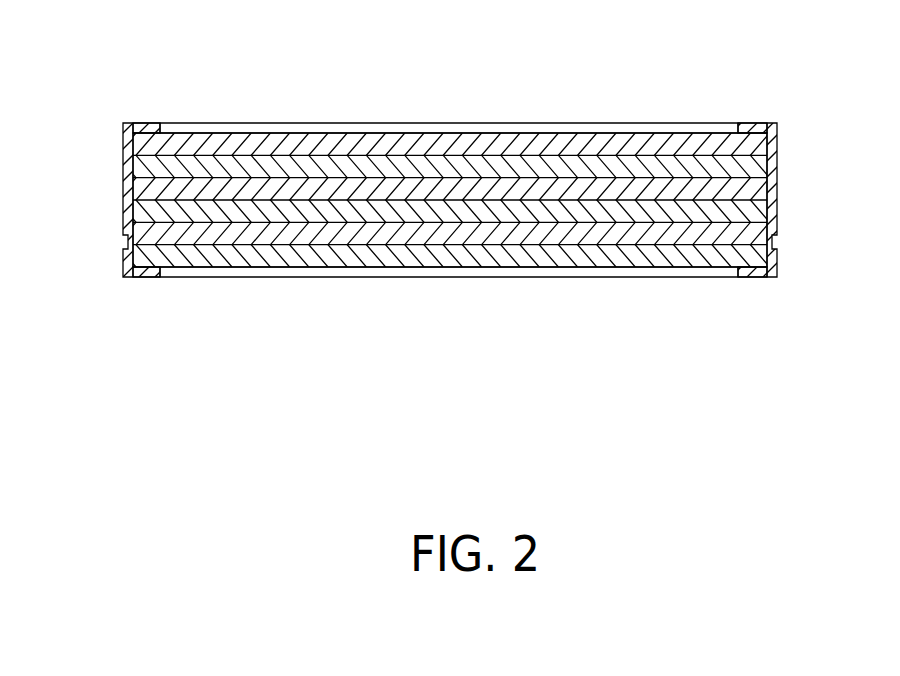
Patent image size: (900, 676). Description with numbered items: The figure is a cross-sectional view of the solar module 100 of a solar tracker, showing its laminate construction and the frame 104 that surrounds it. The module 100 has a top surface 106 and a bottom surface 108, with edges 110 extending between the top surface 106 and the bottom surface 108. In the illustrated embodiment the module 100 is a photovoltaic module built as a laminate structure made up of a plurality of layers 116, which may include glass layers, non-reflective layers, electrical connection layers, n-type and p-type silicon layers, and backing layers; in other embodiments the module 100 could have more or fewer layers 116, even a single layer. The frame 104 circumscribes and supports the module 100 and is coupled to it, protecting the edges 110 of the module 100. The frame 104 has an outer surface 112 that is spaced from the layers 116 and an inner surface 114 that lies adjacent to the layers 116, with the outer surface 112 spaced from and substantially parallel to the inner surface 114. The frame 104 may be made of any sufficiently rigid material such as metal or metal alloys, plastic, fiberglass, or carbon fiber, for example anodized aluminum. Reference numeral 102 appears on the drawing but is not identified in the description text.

The solar module 100 is at (172, 72).
The top plate 102 is at (373, 123).
The frame 104 is at (131, 125).
The top surface 106 is at (492, 133).
The bottom surface 108 is at (462, 268).
The edges 110 is at (125, 202).
The outer surface 112 is at (124, 257).
The inner surface 114 is at (135, 262).
The layers 116 is at (147, 232).